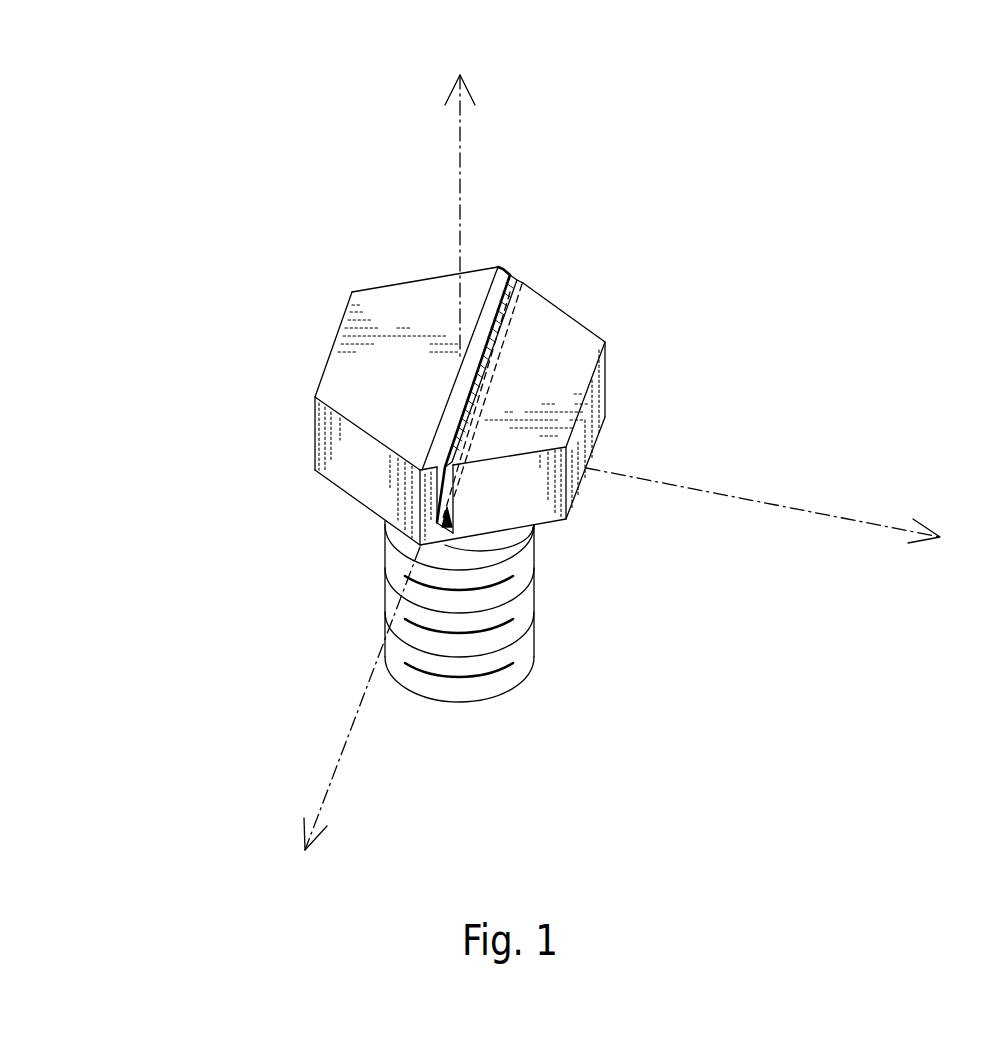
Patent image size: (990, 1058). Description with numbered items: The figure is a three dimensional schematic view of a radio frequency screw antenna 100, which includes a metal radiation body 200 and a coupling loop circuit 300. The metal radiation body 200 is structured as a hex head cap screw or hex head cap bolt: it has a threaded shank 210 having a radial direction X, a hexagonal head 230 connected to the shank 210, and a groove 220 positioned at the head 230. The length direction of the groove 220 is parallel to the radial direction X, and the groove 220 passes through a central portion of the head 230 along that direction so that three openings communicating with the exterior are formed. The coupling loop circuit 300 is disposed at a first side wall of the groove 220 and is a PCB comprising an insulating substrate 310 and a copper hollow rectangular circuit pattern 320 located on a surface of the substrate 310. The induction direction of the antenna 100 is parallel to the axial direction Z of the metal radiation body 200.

The radio frequency screw antenna 100 is at (212, 182).
The metal radiation body 200 is at (748, 598).
The shank 210 is at (522, 608).
The groove 220 is at (425, 545).
The head 230 is at (593, 413).
The coupling loop circuit 300 is at (665, 211).
The substrate 310 is at (488, 268).
The hollow rectangular circuit pattern 320 is at (513, 303).